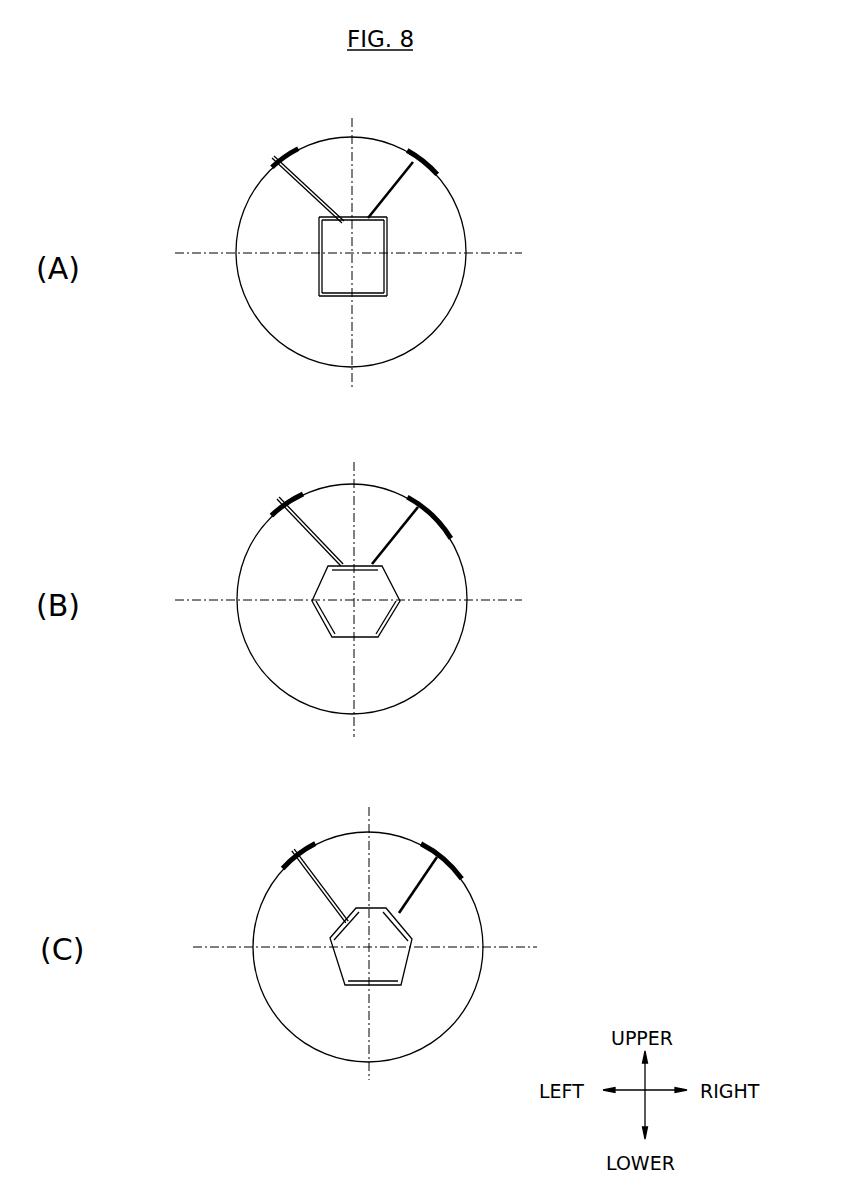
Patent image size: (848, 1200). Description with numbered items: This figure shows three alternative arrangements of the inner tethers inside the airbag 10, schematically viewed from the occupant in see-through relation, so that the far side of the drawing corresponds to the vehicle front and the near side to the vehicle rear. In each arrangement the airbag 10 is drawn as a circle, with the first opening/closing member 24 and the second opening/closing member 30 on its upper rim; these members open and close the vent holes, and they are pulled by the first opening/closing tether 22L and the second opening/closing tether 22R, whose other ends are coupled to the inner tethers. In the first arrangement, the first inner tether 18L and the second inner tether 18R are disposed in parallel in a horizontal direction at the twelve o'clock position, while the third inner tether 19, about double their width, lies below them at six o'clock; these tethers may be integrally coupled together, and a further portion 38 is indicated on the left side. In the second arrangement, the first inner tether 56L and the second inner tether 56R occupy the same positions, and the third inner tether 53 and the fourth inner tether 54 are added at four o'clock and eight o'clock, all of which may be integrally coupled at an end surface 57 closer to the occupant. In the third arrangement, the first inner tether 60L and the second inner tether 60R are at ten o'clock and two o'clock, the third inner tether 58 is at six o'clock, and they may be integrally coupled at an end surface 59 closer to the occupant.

The airbag 10 is at (258, 323).
The first opening/closing member 24 is at (268, 160).
The second opening/closing member 30 is at (430, 160).
The first opening/closing tether 22L is at (308, 190).
The second opening/closing tether 22R is at (400, 178).
The first inner tether 18L is at (318, 221).
The second inner tether 18R is at (386, 222).
The bottom wall of square core 38 is at (319, 288).
The third inner tether 19 is at (354, 268).
The first inner tether 56L is at (328, 567).
The second inner tether 56R is at (382, 567).
The end surface 57 is at (366, 612).
The fourth inner tether 54 is at (318, 616).
The third inner tether 53 is at (392, 620).
The first inner tether 60L is at (331, 939).
The second inner tether 60R is at (408, 926).
The end surface 59 is at (364, 958).
The third inner tether 58 is at (400, 986).